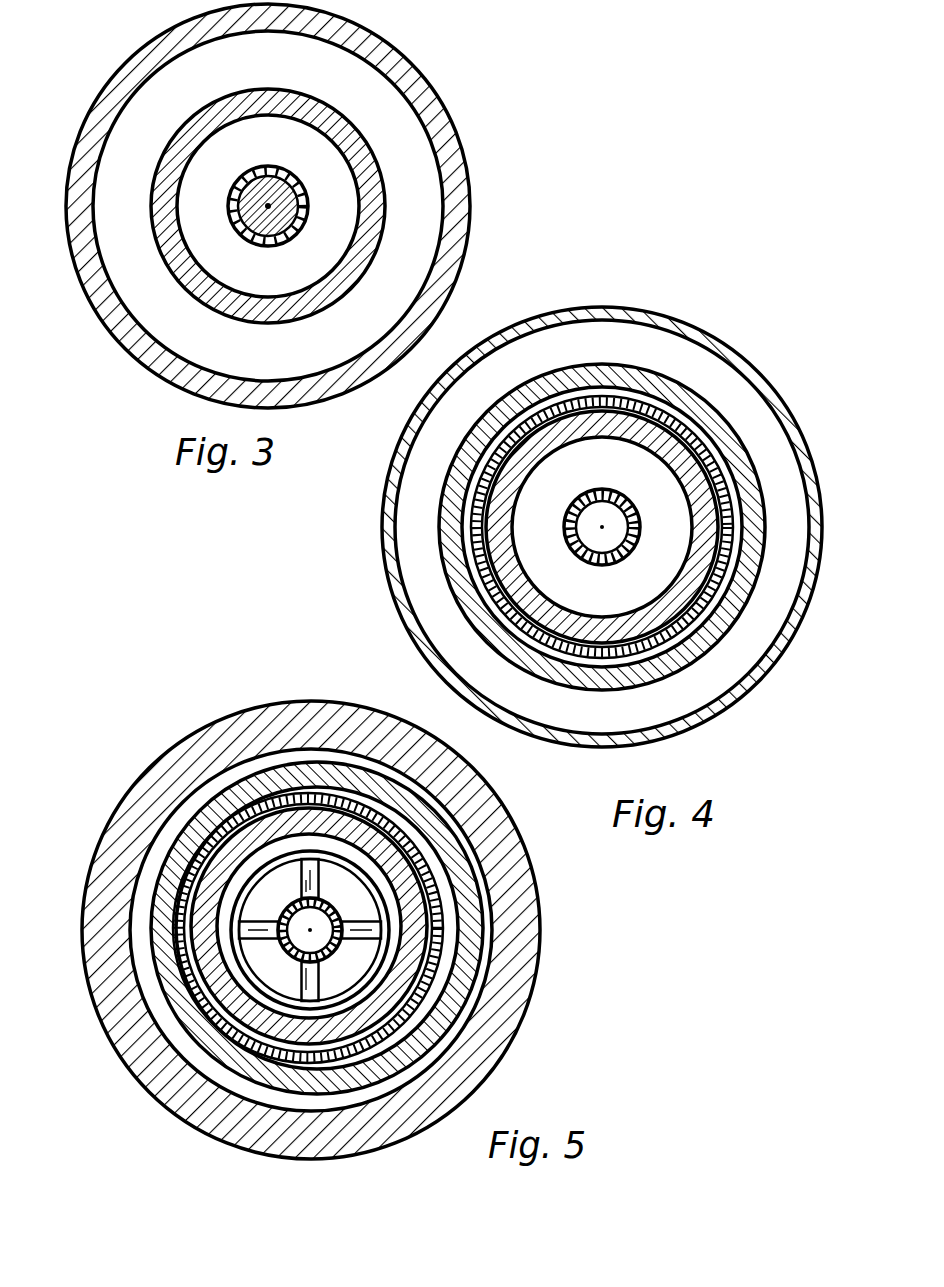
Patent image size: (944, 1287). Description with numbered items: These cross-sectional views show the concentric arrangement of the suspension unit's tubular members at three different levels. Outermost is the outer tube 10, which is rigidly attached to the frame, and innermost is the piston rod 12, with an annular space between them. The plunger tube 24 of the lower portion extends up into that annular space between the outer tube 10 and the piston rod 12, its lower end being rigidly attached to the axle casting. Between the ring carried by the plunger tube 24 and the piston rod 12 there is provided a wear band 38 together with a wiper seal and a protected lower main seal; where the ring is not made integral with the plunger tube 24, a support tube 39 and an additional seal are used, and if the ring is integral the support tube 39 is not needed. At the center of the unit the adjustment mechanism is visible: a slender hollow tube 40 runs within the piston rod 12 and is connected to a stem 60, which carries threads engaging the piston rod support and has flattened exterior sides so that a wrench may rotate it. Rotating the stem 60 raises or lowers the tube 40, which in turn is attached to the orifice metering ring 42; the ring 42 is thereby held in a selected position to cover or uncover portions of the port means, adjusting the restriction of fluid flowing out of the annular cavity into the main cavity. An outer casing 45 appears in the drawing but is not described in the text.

In FIG. 3, the outer tube 10 is at (458, 139).
In FIG. 4, the outer tube 10 is at (740, 698).
In FIG. 3, the piston rod 12 is at (368, 166).
In FIG. 4, the piston rod 12 is at (679, 445).
In FIG. 5, the piston rod 12 is at (263, 820).
In FIG. 4, the plunger tube 24 is at (676, 392).
In FIG. 5, the plunger tube 24 is at (463, 937).
In FIG. 5, the wear band 38 is at (448, 872).
In FIG. 4, the support tube 39 is at (618, 392).
In FIG. 5, the support tube 39 is at (308, 928).
In FIG. 3, the slender hollow tube 40 is at (265, 244).
In FIG. 4, the slender hollow tube 40 is at (590, 494).
In FIG. 5, the slender hollow tube 40 is at (332, 900).
In FIG. 5, the orifice metering ring 42 is at (373, 984).
In FIG. 5, the outer casing 45 is at (533, 900).
In FIG. 3, the stem 60 is at (309, 203).